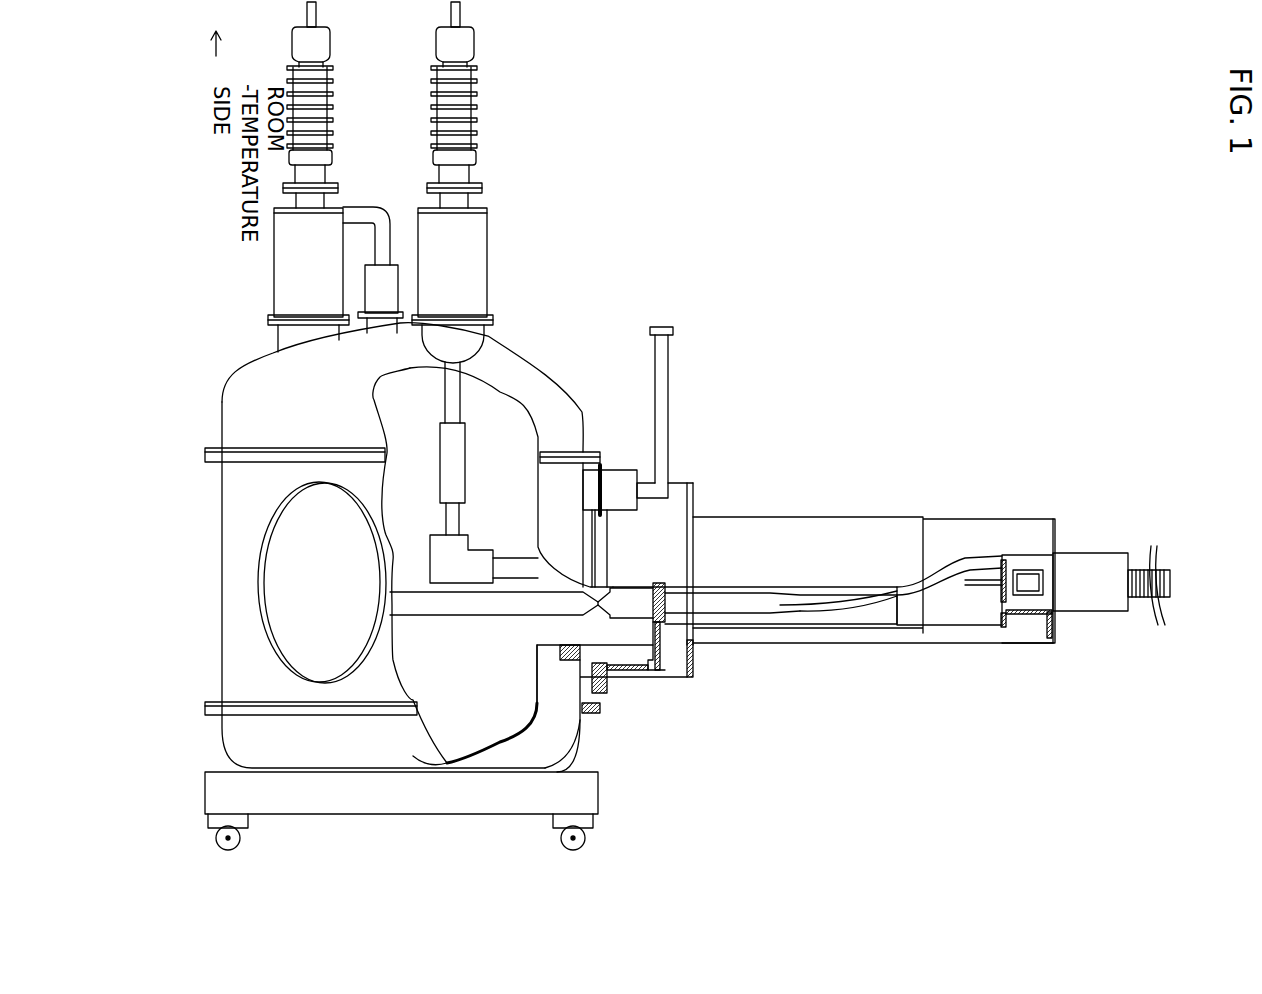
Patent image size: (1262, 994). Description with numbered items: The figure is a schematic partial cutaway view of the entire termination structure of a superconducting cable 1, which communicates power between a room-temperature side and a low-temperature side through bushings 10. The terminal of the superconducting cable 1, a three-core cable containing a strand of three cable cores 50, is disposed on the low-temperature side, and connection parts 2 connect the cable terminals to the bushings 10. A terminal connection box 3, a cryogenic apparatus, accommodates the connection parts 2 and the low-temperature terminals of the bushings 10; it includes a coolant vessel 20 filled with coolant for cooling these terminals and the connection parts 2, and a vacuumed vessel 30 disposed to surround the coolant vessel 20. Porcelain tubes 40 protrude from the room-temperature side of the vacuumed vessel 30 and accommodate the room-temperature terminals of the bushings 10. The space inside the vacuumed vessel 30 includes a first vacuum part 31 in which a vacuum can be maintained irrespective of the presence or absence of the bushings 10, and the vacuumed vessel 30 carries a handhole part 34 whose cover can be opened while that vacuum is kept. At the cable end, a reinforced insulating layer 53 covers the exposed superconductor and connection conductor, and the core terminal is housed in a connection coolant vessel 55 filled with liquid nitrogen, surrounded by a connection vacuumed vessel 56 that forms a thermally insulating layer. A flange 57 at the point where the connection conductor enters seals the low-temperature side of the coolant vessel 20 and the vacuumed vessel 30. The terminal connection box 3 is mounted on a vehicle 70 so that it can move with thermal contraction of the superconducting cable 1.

The superconducting cable 1 is at (1153, 597).
The connection parts 2 is at (458, 572).
The terminal connection box 3 is at (230, 378).
The bushings 10 is at (500, 380).
The coolant vessel 20 is at (480, 753).
The vacuumed vessel 30 is at (583, 730).
The first vacuum part 31 is at (563, 752).
The handhole part of the vacuumed vessel 34 is at (295, 588).
The porcelain tubes 40 is at (328, 113).
The cable cores 50 is at (985, 590).
The reinforced insulating layer 53 is at (722, 610).
The connection coolant vessel 55 is at (813, 628).
The connection vacuumed vessel 56 is at (783, 537).
The flange 57 is at (662, 657).
The vehicle 70 is at (598, 793).